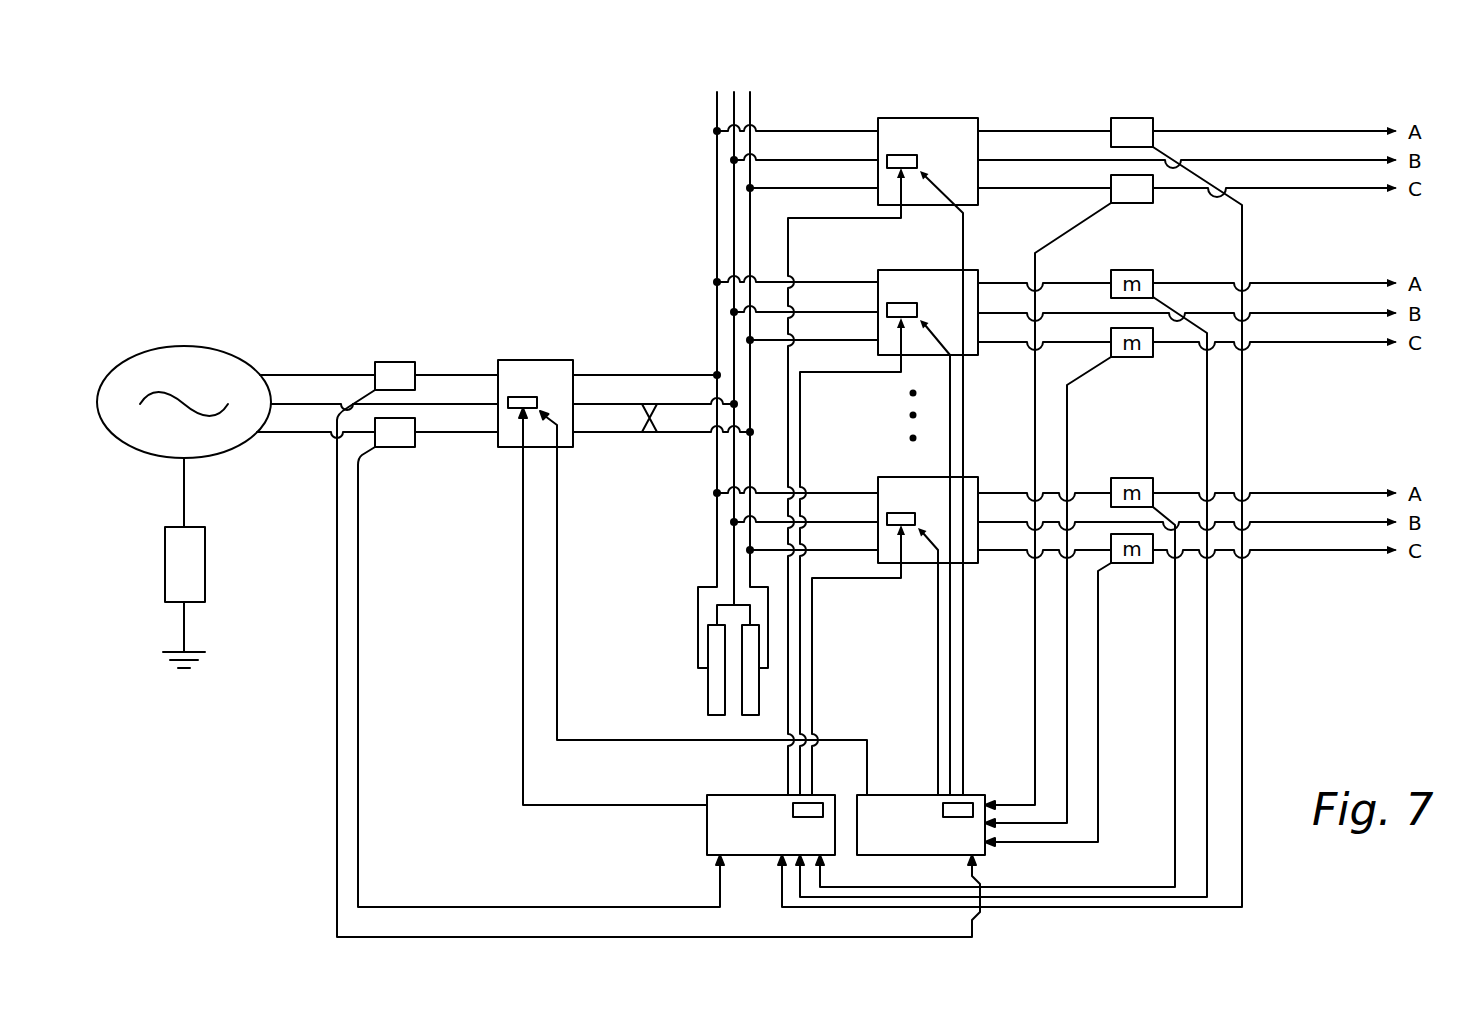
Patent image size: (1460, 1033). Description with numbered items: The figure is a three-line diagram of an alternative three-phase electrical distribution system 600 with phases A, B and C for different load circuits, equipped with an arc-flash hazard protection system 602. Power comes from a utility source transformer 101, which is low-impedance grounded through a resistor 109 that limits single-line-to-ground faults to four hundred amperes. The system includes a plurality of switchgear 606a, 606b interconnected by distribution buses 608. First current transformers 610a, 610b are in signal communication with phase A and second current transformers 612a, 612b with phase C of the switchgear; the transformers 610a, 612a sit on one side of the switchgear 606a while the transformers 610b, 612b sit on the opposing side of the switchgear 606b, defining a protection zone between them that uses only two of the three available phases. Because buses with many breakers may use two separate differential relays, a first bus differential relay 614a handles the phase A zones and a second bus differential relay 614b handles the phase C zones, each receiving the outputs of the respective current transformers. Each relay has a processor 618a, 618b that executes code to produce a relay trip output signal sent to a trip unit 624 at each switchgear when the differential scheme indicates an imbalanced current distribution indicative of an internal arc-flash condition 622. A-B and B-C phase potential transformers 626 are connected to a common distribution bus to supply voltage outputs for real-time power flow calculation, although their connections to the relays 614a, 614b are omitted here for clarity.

The utility source transformer 101 is at (158, 346).
The resistor 109 is at (165, 565).
The electrical distribution system 600 is at (305, 215).
The arc-flash hazard protection system 602 is at (676, 847).
The switchgear 606a is at (535, 360).
The switchgear 606b is at (950, 118).
The distribution buses 608 is at (785, 131).
The first current transformer 610a is at (400, 362).
The first current transformer 610b is at (1140, 118).
The second current transformer 612a is at (400, 447).
The second current transformer 612b is at (1135, 203).
The first bus differential relay 614a is at (740, 795).
The second bus differential relay 614b is at (913, 795).
The processor 618a is at (793, 812).
The processor 618b is at (943, 812).
The internal arc-flash condition 622 is at (646, 450).
The trip unit 624 is at (518, 397).
The potential transformers 626 is at (684, 694).